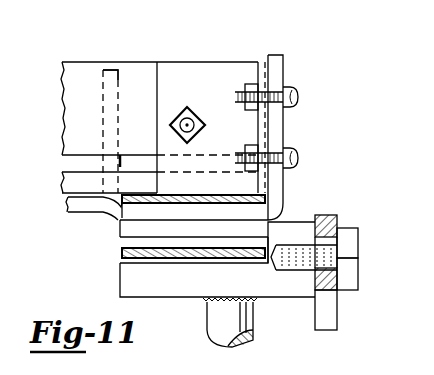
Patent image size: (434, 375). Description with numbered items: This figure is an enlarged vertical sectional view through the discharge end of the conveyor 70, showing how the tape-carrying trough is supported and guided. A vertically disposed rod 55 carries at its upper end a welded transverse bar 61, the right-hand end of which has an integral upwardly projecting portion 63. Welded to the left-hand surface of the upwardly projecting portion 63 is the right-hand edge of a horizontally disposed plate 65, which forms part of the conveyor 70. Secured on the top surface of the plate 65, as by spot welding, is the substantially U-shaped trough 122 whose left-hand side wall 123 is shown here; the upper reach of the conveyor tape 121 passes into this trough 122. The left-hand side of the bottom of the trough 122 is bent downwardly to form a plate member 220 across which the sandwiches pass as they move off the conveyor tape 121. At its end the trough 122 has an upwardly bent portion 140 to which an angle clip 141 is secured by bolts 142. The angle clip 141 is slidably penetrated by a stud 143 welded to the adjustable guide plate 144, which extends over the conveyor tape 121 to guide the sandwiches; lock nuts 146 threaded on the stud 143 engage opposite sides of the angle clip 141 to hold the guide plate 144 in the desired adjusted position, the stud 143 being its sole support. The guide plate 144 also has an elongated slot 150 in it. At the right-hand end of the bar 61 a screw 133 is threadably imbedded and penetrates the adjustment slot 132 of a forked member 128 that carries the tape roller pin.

The rod 55 is at (252, 325).
The transverse bar 61 is at (121, 281).
The upwardly projecting portion 63 is at (307, 223).
The plate 65 is at (121, 233).
The conveyor 70 is at (120, 81).
The conveyor tape 121 is at (227, 203).
The trough 122 is at (181, 213).
The side wall 123 is at (114, 113).
The forked member 128 is at (338, 318).
The adjustment slot 132 is at (335, 241).
The screw 133 is at (360, 282).
The upwardly bent portion 140 is at (284, 136).
The angle clip 141 is at (263, 62).
The bolts 142 is at (298, 94).
The stud 143 is at (194, 119).
The guide plate 144 is at (213, 70).
The lock nuts 146 is at (181, 112).
The elongated slot 150 is at (78, 161).
The plate member 220 is at (68, 211).